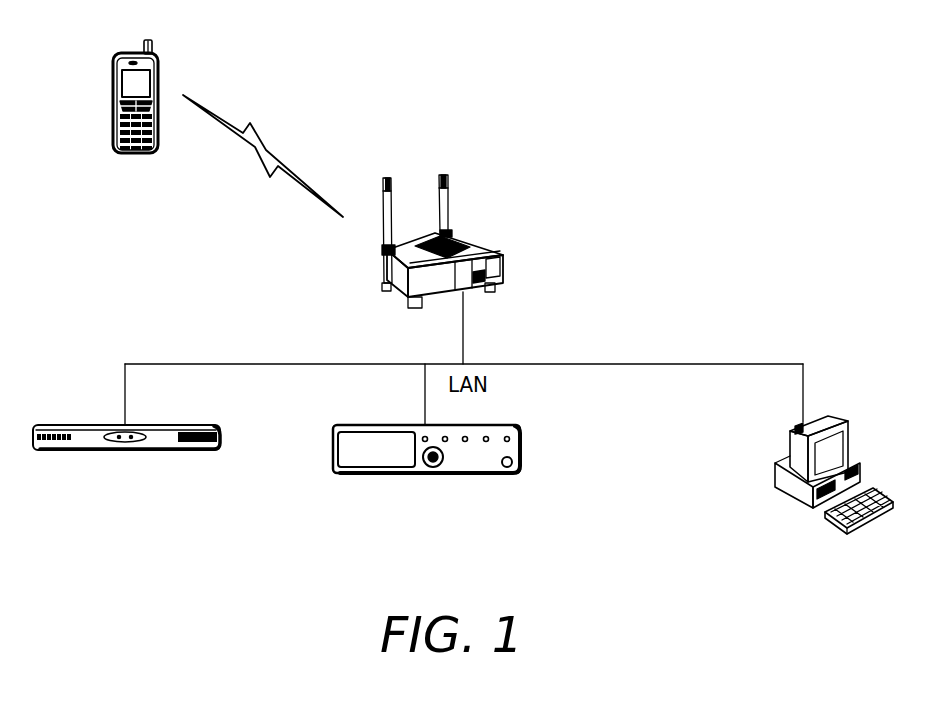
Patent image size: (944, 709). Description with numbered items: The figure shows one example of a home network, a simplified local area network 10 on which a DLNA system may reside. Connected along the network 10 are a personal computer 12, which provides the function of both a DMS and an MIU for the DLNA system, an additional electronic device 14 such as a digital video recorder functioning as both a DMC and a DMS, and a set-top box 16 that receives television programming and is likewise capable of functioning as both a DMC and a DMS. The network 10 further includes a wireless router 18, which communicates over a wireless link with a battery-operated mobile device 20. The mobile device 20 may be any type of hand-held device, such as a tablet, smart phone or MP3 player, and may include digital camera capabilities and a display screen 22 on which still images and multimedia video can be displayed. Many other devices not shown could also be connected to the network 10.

The local area network 10 is at (723, 128).
The personal computer 12 is at (845, 418).
The electronic device 14 is at (498, 425).
The set-top box 16 is at (198, 423).
The wireless router 18 is at (478, 244).
The mobile device 20 is at (157, 128).
The display screen 22 is at (132, 83).